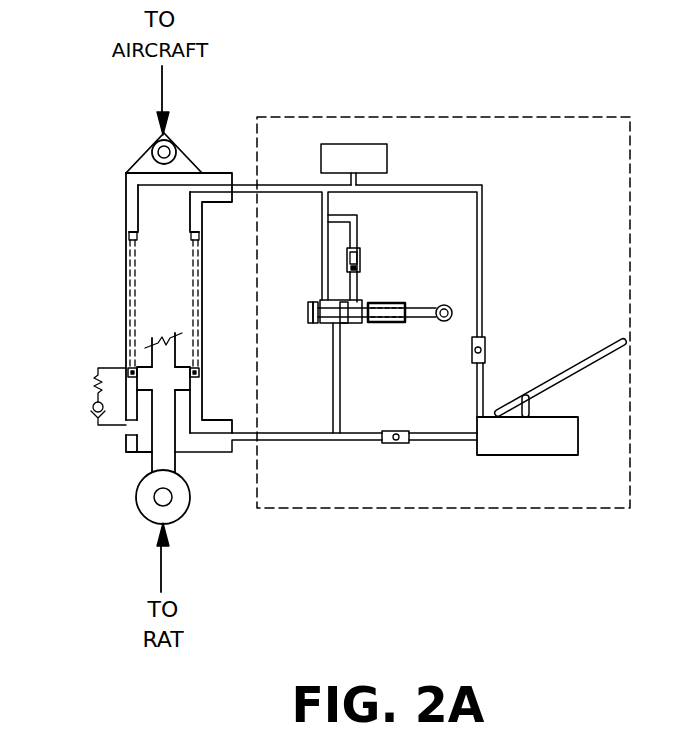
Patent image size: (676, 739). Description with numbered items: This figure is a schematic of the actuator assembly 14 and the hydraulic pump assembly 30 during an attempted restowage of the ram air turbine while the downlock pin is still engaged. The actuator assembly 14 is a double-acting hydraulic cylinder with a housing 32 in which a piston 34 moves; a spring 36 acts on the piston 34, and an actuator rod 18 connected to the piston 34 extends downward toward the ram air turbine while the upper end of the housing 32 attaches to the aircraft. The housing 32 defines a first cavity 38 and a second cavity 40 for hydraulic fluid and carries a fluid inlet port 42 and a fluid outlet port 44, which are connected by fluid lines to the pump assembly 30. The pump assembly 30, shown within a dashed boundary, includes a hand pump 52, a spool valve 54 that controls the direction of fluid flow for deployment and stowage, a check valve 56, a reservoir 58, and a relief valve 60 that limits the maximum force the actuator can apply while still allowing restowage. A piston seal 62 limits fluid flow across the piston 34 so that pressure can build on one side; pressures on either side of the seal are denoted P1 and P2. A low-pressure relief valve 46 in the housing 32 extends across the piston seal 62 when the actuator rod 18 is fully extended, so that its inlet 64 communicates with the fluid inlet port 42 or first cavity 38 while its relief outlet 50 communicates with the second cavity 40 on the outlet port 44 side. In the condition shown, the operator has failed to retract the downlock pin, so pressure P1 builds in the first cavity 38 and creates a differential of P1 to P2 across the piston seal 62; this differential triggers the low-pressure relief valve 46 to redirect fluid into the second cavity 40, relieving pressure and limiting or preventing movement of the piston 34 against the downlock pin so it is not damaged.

The actuator assembly 14 is at (110, 188).
The actuator rod 18 is at (150, 462).
The hydraulic pump assembly 30 is at (575, 117).
The housing 32 is at (130, 219).
The piston 34 is at (202, 370).
The spring 36 is at (198, 264).
The first cavity 38 is at (182, 411).
The second cavity 40 is at (152, 257).
The fluid inlet port 42 is at (193, 430).
The fluid outlet port 44 is at (218, 190).
The low-pressure relief valve 46 is at (91, 405).
The relief outlet 50 is at (130, 368).
The hand pump 52 is at (535, 455).
The valve 54 is at (390, 323).
The check valve 56 is at (486, 348).
The reservoir 58 is at (388, 159).
The relief valve 60 is at (362, 260).
The piston seal 62 is at (192, 387).
The inlet 64 is at (132, 428).
The pressure P1 is at (148, 436).
The pressure P2 is at (142, 356).